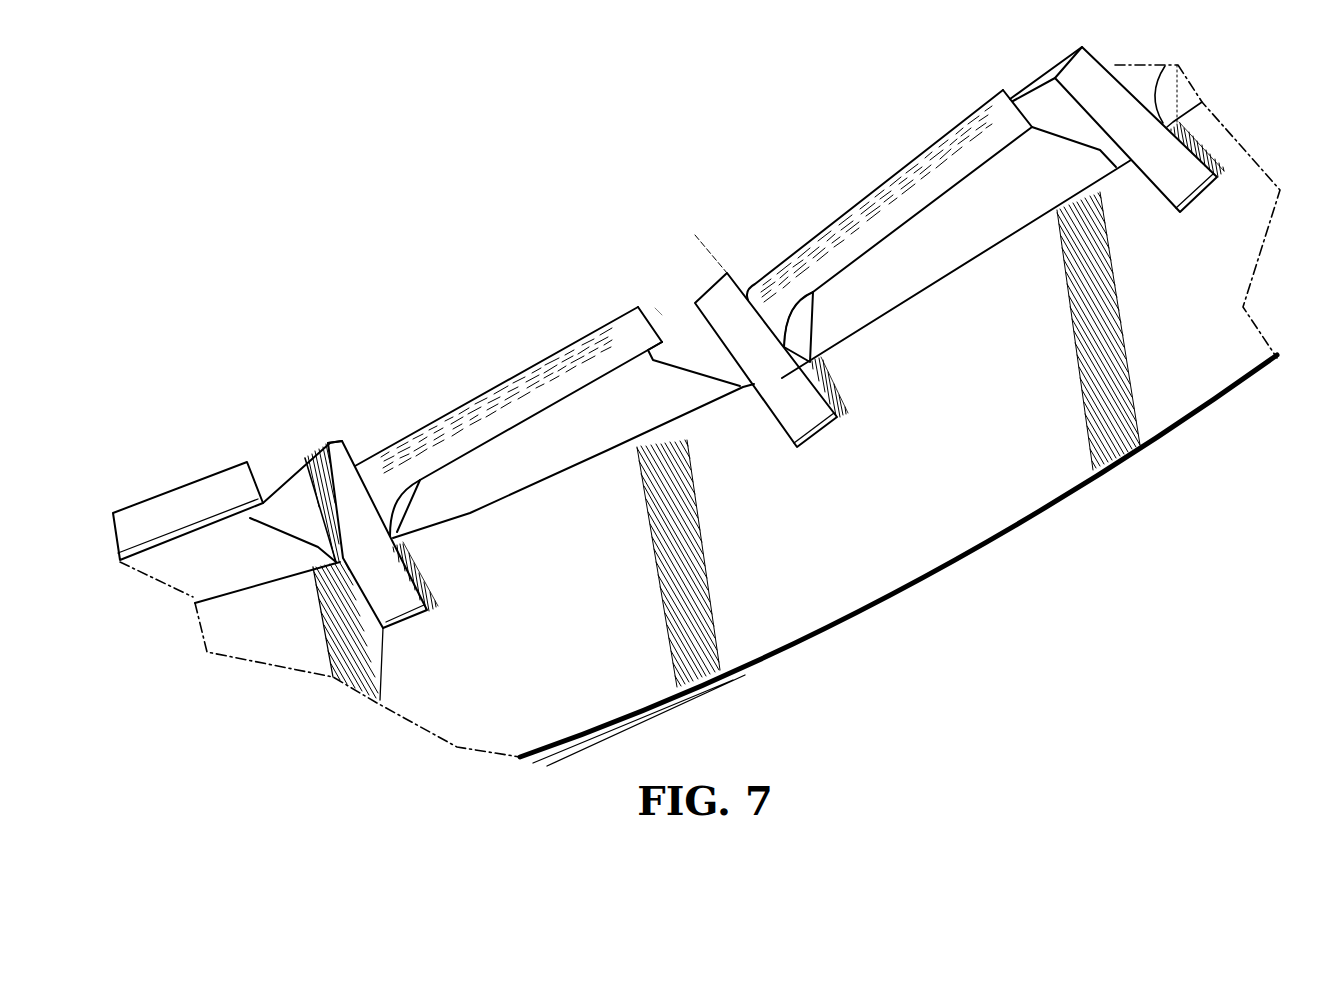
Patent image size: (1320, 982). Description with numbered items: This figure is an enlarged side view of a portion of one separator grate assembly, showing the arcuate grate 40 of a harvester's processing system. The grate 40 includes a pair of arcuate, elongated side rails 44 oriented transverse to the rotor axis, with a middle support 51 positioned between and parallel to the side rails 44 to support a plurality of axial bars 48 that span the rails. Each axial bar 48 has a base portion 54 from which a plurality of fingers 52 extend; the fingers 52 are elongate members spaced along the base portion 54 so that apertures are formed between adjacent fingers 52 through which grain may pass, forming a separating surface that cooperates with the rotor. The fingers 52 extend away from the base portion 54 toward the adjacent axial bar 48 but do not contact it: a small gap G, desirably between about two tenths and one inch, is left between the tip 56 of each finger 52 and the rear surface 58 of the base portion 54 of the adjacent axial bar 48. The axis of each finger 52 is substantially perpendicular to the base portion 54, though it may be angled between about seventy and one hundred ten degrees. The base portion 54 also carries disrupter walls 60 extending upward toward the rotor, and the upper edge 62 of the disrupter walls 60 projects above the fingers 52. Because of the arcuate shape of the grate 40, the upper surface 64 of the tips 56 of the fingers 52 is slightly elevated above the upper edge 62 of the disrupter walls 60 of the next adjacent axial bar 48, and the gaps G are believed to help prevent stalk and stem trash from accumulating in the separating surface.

The grate 40 is at (917, 614).
The side rail 44 is at (1011, 378).
The axial bar 48 is at (412, 577).
The middle support 51 is at (579, 456).
The finger 52 is at (520, 372).
The base portion 54 is at (818, 443).
The tip 56 is at (636, 306).
The rear surface 58 is at (752, 302).
The disrupter wall 60 is at (348, 455).
The upper edge 62 is at (311, 460).
The upper surface 64 is at (606, 325).
The gap G is at (655, 305).